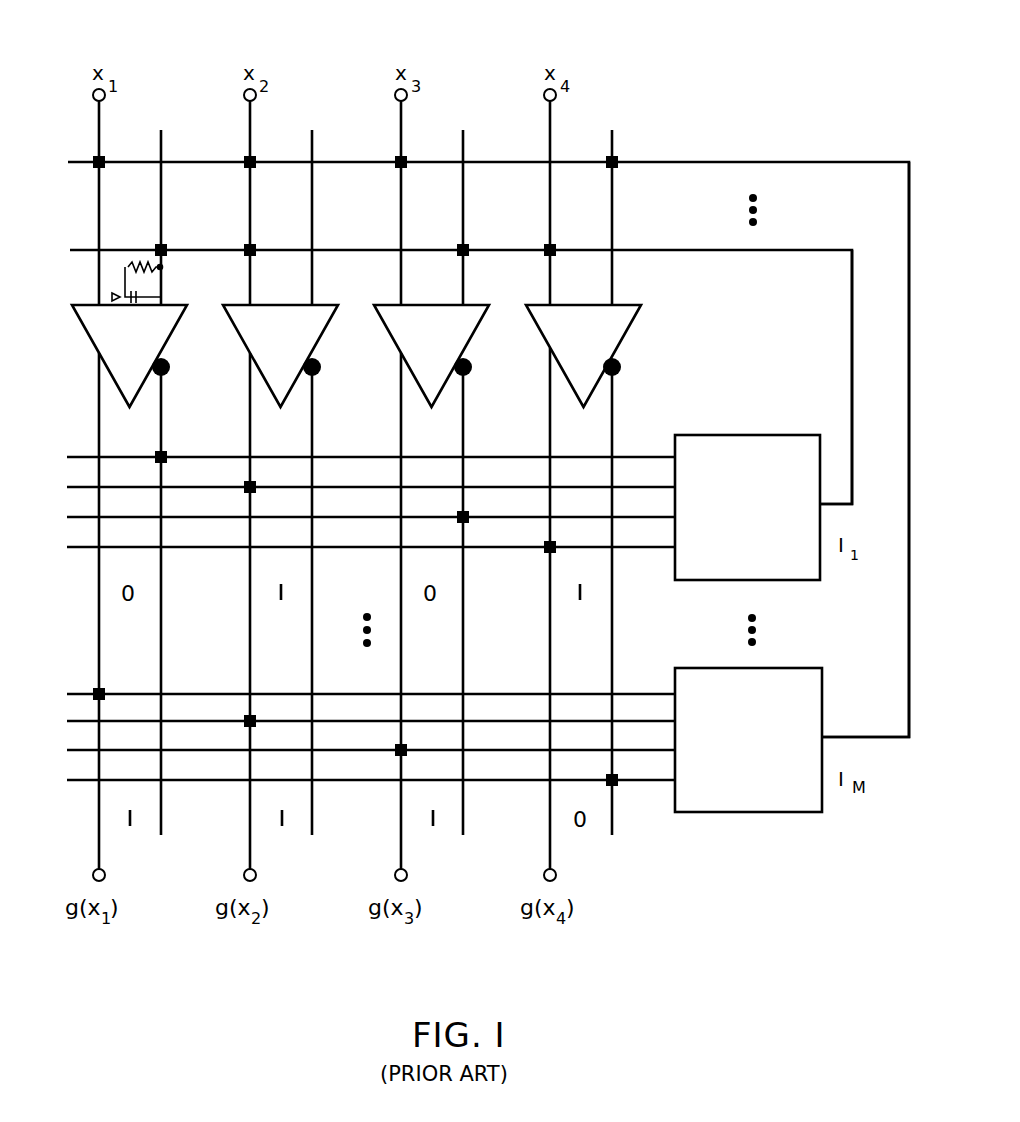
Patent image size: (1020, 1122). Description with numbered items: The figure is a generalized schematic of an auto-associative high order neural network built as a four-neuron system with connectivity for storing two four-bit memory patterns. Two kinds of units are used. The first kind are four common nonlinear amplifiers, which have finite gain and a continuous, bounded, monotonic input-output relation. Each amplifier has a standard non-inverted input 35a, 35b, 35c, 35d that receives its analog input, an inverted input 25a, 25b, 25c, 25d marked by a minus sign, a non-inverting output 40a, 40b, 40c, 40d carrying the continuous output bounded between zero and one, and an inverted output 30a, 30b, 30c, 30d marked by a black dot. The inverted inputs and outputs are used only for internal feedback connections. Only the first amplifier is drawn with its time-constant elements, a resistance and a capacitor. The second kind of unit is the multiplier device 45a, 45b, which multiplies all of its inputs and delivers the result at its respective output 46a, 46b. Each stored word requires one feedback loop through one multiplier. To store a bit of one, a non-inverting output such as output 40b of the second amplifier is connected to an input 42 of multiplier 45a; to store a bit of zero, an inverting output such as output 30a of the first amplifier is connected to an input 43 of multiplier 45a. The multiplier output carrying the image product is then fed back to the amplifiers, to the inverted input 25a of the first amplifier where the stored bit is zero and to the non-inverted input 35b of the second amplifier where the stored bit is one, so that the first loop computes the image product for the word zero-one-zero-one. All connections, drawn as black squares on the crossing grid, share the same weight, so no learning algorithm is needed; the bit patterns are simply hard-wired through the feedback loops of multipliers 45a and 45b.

The inverted input 25a is at (164, 306).
The inverted input 25b is at (314, 305).
The inverted input 25c is at (466, 305).
The inverted input 25d is at (614, 305).
The non-inverted input 35a is at (97, 303).
The non-inverted input 35b is at (247, 305).
The non-inverted input 35c is at (400, 305).
The non-inverted input 35d is at (550, 305).
The non-inverting output 40a is at (96, 352).
The non-inverting output 40b is at (250, 353).
The non-inverting output 40c is at (401, 353).
The non-inverting output 40d is at (550, 350).
The inverted output 30a is at (168, 378).
The inverted output 30b is at (320, 378).
The inverted output 30c is at (472, 378).
The inverted output 30d is at (622, 370).
The multiplier input 42 is at (672, 487).
The multiplier input 43 is at (660, 457).
The multiplier device 45a is at (782, 435).
The multiplier device 45b is at (790, 812).
The multiplier output 46a is at (822, 505).
The multiplier output 46b is at (823, 737).